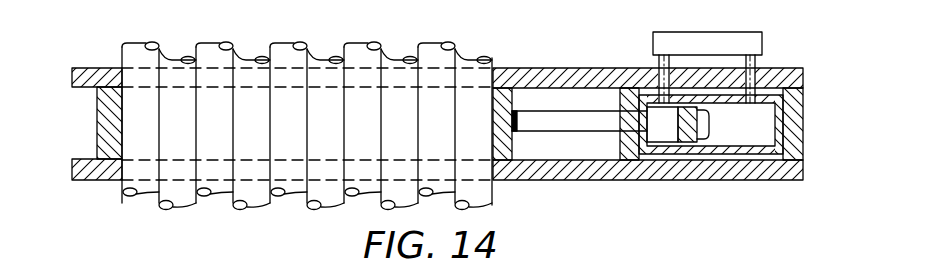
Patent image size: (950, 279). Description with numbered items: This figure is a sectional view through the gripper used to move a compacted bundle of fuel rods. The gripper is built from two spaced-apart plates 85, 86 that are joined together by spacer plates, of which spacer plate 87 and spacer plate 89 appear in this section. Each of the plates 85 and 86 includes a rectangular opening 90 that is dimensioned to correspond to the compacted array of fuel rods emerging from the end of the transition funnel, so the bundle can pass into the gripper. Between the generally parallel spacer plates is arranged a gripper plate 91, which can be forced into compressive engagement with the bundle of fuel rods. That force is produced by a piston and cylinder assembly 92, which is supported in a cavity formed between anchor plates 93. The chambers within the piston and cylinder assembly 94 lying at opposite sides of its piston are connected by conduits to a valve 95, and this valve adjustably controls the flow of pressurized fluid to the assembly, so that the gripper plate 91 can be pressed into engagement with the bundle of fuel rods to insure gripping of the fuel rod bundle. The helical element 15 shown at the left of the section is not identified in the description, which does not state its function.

The coil spring 15 is at (283, 44).
The plate 85 is at (545, 68).
The plate 86 is at (650, 181).
The spacer plate 87 is at (97, 137).
The spacer plate 89 is at (624, 4).
The rectangular opening 90 is at (513, 152).
The gripper plate 91 is at (737, 152).
The piston and cylinder assembly 92 is at (803, 122).
The anchor plates 93 is at (617, 143).
The piston and cylinder assembly 94 is at (708, 142).
The valve 95 is at (733, 32).